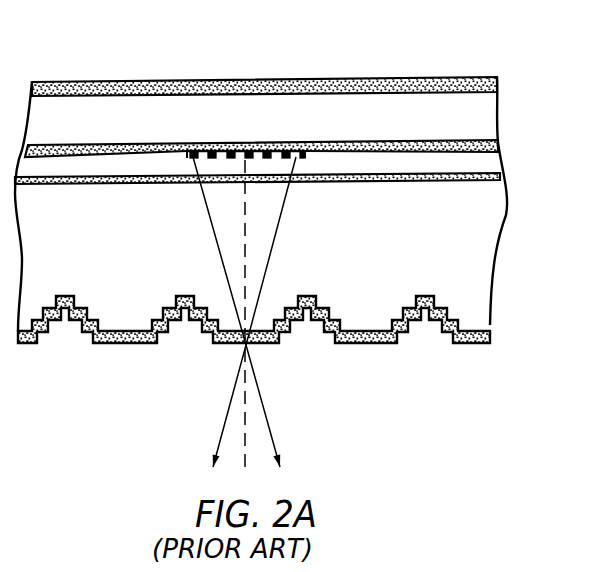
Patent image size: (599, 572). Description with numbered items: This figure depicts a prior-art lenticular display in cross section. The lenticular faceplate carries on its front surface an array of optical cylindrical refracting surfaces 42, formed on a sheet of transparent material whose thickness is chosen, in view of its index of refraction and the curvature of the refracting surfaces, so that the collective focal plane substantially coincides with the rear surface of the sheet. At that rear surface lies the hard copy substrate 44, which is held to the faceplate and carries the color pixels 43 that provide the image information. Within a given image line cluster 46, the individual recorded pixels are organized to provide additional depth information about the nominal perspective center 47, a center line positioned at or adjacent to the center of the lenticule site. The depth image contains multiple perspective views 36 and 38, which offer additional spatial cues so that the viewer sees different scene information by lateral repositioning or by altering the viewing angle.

The perspective view 36 is at (192, 149).
The perspective view 38 is at (300, 146).
The optical cylindrical refracting surfaces 42 is at (118, 346).
The color pixels 43 is at (187, 166).
The hard copy substrate 44 is at (480, 115).
The image line cluster 46 is at (273, 122).
The nominal perspective center 47 is at (245, 218).